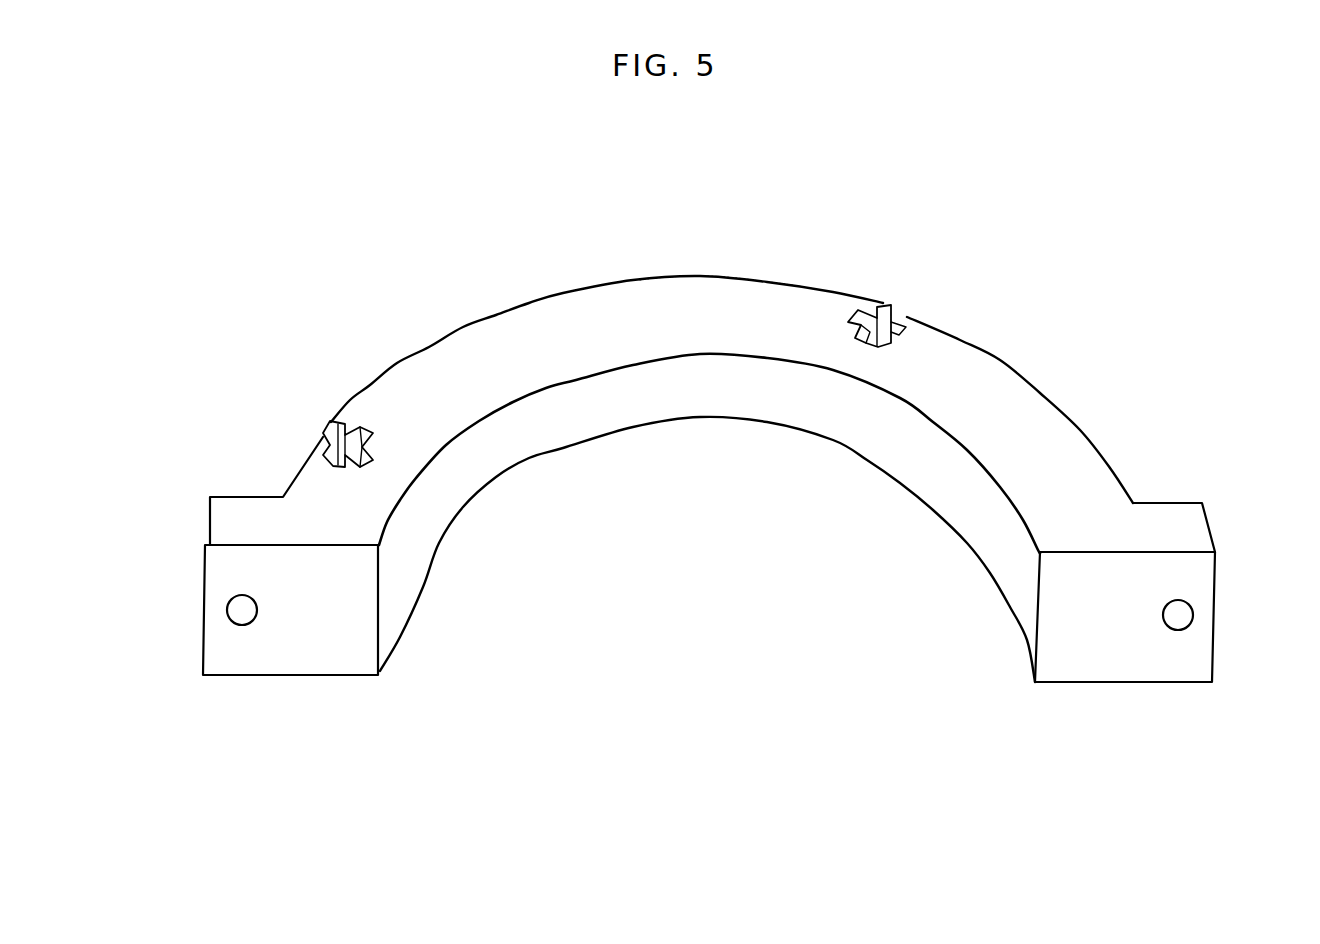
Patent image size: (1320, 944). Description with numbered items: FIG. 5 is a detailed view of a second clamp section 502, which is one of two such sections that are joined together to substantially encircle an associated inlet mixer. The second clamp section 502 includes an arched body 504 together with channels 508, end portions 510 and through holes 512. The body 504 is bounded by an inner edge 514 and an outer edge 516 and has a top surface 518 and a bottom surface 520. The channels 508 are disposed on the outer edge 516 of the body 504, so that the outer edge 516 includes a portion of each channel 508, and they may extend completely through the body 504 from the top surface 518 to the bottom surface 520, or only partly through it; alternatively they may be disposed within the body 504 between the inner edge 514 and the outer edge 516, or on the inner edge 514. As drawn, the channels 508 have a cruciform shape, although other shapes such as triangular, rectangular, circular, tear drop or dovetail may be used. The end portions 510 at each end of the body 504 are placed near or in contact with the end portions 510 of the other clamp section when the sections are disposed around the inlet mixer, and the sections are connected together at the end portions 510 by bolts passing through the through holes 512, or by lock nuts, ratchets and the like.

The second clamp section 502 is at (525, 252).
The body 504 is at (572, 447).
The channels 508 is at (323, 425).
The end portions 510 is at (332, 676).
The through holes 512 is at (240, 608).
The inner edge 514 is at (766, 403).
The outer edge 516 is at (795, 267).
The top surface 518 is at (750, 335).
The bottom surface 520 is at (715, 431).